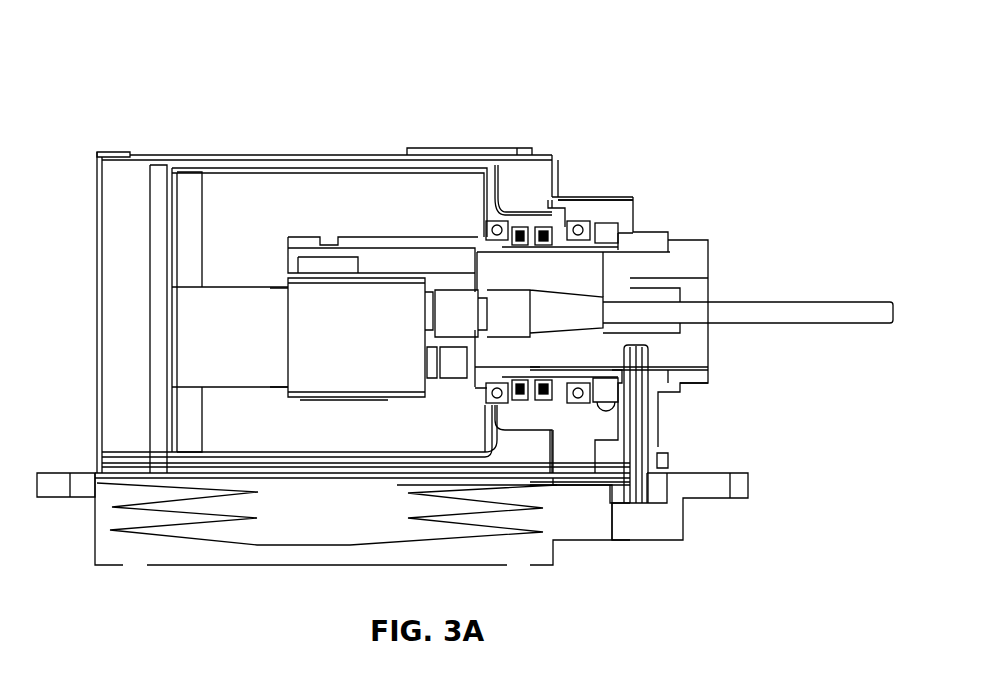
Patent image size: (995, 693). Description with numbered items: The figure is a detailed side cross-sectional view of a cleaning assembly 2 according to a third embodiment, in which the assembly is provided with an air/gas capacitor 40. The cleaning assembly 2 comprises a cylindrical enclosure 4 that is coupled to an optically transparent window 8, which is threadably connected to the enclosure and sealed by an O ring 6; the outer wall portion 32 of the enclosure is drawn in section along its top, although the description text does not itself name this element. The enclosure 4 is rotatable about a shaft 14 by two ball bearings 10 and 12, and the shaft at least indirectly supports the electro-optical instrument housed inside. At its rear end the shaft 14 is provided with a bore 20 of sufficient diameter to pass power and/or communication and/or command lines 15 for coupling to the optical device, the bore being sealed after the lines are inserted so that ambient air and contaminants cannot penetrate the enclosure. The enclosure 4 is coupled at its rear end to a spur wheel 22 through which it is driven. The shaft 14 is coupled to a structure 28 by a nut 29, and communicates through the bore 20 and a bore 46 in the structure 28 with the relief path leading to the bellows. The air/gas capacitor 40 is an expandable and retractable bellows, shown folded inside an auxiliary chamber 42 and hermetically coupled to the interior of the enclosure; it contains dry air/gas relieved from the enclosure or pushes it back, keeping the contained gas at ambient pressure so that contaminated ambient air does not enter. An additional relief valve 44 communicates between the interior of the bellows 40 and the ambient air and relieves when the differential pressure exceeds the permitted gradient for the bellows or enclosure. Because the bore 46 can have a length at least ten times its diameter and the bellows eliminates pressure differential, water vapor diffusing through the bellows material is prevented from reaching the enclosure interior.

The cleaning assembly 2 is at (510, 95).
The cylindrical enclosure 4 is at (295, 168).
The O ring 6 is at (170, 167).
The optically transparent window 8 is at (152, 213).
The ball bearing 10 is at (495, 228).
The ball bearing 12 is at (578, 228).
The shaft 14 is at (378, 247).
The power and/or communication and/or command lines 15 is at (802, 312).
The bore 20 is at (660, 297).
The spur wheel 22 is at (605, 238).
The structure 28 is at (633, 198).
The nut 29 is at (683, 375).
The housing top wall 32 is at (222, 153).
The air/gas capacitor 40 is at (317, 518).
The auxiliary chamber 42 is at (107, 500).
The additional relief valve 44 is at (638, 523).
The bore 46 is at (637, 407).